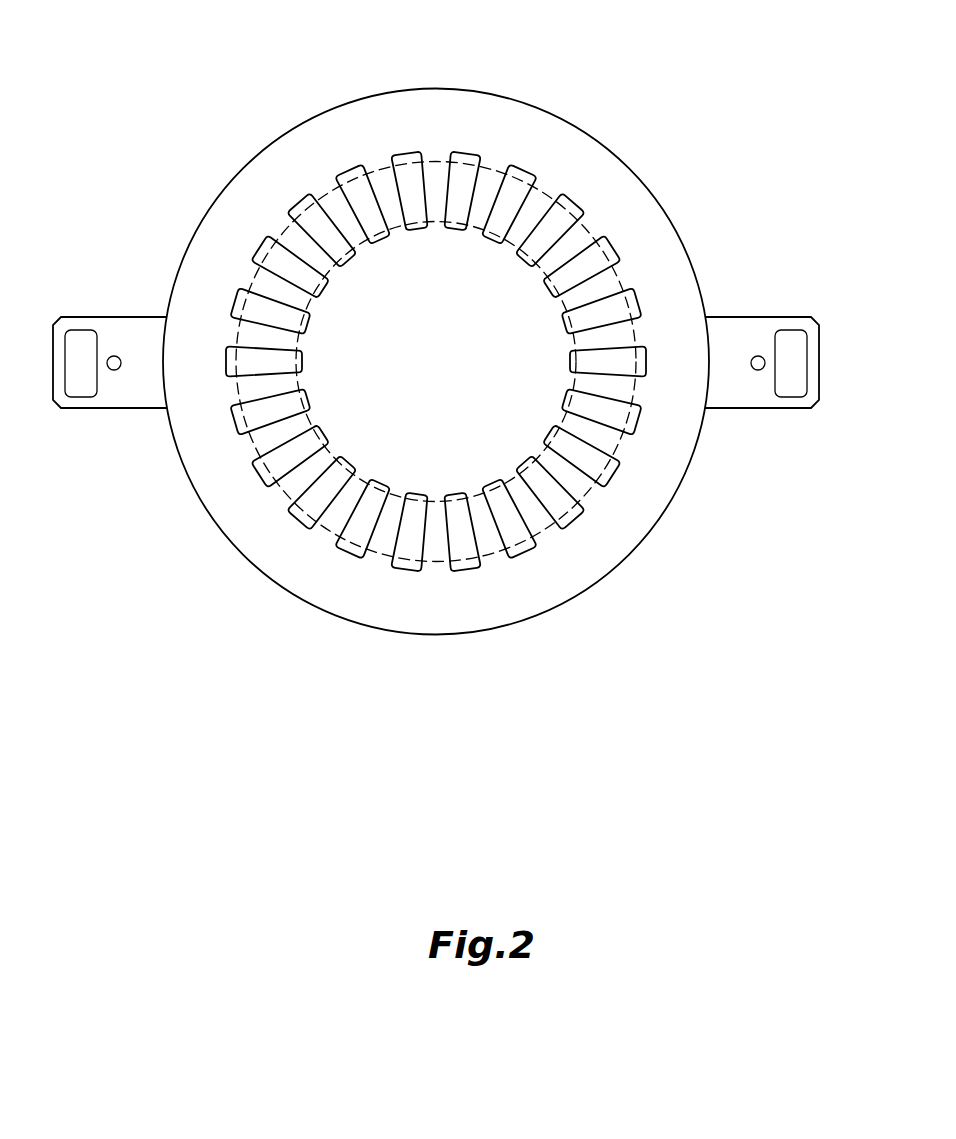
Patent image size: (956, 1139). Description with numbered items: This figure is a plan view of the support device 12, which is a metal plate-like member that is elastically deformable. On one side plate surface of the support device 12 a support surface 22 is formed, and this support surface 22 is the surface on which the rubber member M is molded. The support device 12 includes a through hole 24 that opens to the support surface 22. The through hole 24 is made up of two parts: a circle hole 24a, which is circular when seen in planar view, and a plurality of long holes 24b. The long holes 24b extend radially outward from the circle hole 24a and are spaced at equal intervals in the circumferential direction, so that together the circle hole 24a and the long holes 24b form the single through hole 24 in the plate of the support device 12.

The support device 12 is at (436, 369).
The support surface 22 is at (620, 196).
The through hole 24 is at (429, 439).
The circle hole 24a is at (313, 413).
The long holes 24b is at (343, 548).
The rubber member M is at (377, 168).